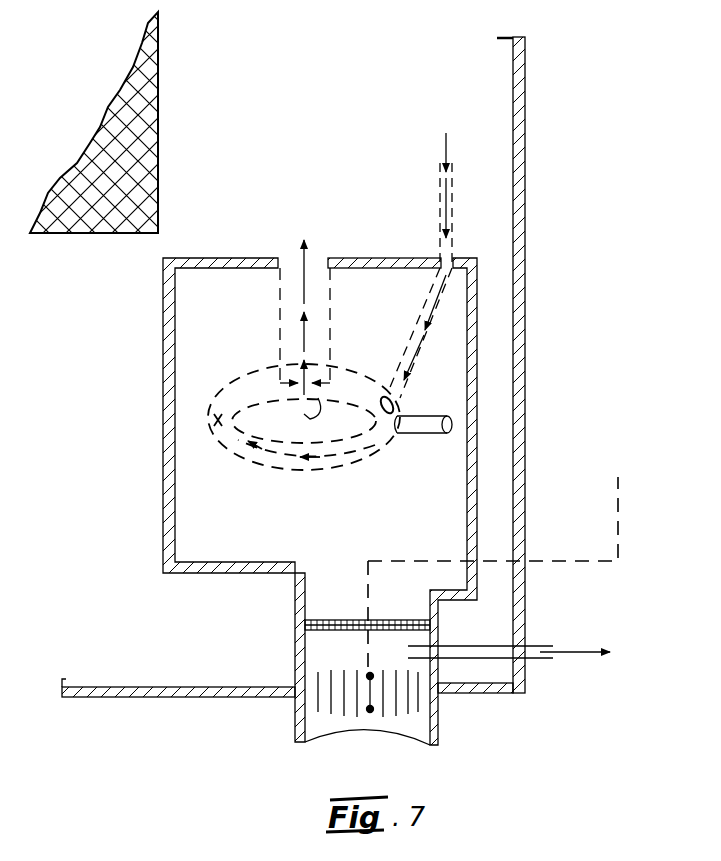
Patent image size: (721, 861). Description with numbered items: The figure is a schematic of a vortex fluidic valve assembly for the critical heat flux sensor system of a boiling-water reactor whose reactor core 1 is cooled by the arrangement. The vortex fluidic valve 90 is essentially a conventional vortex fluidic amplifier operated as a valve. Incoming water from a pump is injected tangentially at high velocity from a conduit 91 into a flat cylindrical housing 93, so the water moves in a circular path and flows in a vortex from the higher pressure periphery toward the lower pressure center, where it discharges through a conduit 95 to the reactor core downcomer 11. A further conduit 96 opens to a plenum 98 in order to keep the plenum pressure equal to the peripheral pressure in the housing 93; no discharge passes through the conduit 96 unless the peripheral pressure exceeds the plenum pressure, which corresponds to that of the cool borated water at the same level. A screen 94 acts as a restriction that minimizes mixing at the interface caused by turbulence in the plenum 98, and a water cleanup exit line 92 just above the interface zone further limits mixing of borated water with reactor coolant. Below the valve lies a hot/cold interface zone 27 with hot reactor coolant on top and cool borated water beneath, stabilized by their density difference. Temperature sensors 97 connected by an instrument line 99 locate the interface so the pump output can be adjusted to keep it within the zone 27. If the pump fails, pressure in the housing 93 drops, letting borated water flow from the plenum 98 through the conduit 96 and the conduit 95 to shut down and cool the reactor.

The reactor core 1 is at (142, 124).
The reactor core downcomer 11 is at (273, 89).
The hot/cold interface zone 27 is at (405, 700).
The vortex fluidic valve 90 is at (210, 420).
The conduit 91 is at (432, 300).
The water cleanup exit line 92 is at (538, 645).
The flat cylindrical housing 93 is at (260, 468).
The screen 94 is at (383, 618).
The conduit 95 is at (278, 296).
The conduit 96 is at (426, 414).
The temperature sensors 97 is at (370, 709).
The plenum 98 is at (421, 513).
The instrument line 99 is at (593, 558).